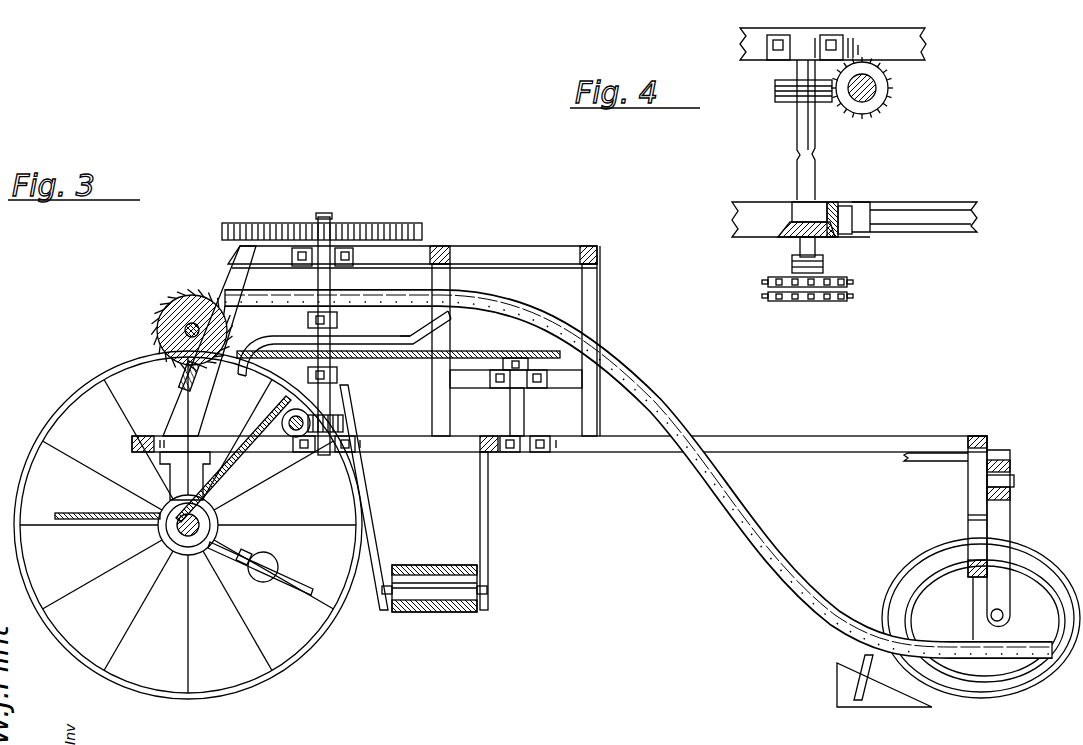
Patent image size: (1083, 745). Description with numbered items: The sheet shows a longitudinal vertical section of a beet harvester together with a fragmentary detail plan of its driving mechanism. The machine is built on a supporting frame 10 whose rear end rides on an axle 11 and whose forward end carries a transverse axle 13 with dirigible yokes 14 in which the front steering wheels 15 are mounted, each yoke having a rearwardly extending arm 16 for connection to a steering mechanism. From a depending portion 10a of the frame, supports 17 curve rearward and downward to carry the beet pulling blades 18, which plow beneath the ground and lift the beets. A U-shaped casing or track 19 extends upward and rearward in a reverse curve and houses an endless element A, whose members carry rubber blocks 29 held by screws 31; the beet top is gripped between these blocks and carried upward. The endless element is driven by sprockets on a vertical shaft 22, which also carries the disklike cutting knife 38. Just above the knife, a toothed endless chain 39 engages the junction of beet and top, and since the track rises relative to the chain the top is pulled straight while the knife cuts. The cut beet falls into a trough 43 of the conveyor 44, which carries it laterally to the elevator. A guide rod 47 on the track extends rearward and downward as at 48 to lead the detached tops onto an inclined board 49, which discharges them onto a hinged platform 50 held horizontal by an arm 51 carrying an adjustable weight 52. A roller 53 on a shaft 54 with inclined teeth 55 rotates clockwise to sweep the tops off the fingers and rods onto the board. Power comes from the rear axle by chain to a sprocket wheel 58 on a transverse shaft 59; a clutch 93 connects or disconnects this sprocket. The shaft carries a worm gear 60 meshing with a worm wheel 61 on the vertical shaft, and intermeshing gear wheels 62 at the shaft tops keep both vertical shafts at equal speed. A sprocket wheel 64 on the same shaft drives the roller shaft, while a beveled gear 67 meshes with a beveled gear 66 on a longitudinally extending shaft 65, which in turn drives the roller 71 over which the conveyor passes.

In FIG. 3, the supporting frame 10 is at (765, 436).
In FIG. 3, the depending portion 10a is at (968, 527).
In FIG. 3, the axle 11 is at (175, 548).
In FIG. 3, the transverse axle 13 is at (1010, 470).
In FIG. 3, the dirigible yoke 14 is at (1000, 548).
In FIG. 3, the front steering wheel 15 is at (932, 571).
In FIG. 3, the rearwardly extending arm 16 is at (925, 462).
In FIG. 3, the support 17 is at (893, 605).
In FIG. 3, the beet pulling blade 18 is at (890, 700).
In FIG. 3, the track 19 is at (380, 292).
In FIG. 3, the vertical shaft 22 is at (326, 219).
In FIG. 4, the vertical shaft 22 is at (878, 89).
In FIG. 3, the rubber block 29 is at (705, 485).
In FIG. 3, the screw 31 is at (648, 381).
In FIG. 3, the endless element A is at (620, 345).
In FIG. 3, the cutting knife 38 is at (398, 366).
In FIG. 3, the endless chain 39 is at (478, 351).
In FIG. 3, the trough 43 is at (465, 493).
In FIG. 3, the conveyor 44 is at (428, 565).
In FIG. 3, the guide rod 47 is at (392, 345).
In FIG. 3, the guide rod portion 48 is at (262, 348).
In FIG. 3, the inclined board 49 is at (256, 428).
In FIG. 3, the hinged platform 50 is at (82, 513).
In FIG. 3, the arm 51 is at (200, 562).
In FIG. 3, the adjustable weight 52 is at (266, 582).
In FIG. 3, the roller 53 is at (185, 300).
In FIG. 3, the shaft 54 is at (185, 330).
In FIG. 3, the inclined teeth 55 is at (208, 291).
In FIG. 4, the sprocket wheel 58 is at (800, 301).
In FIG. 3, the transverse shaft 59 is at (291, 437).
In FIG. 4, the transverse shaft 59 is at (815, 150).
In FIG. 3, the worm gear 60 is at (296, 408).
In FIG. 4, the worm gear 60 is at (778, 104).
In FIG. 3, the worm wheel 61 is at (343, 424).
In FIG. 4, the worm wheel 61 is at (878, 112).
In FIG. 3, the intermeshing gear wheel 62 is at (290, 224).
In FIG. 4, the sprocket wheel 64 is at (848, 280).
In FIG. 4, the longitudinally extending shaft 65 is at (930, 232).
In FIG. 4, the beveled gear 66 is at (838, 206).
In FIG. 4, the beveled gear 67 is at (786, 220).
In FIG. 3, the roller 71 is at (430, 590).
In FIG. 4, the clutch 93 is at (792, 262).